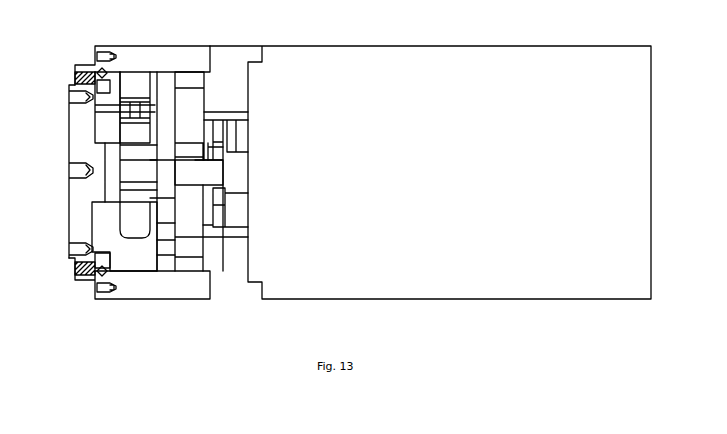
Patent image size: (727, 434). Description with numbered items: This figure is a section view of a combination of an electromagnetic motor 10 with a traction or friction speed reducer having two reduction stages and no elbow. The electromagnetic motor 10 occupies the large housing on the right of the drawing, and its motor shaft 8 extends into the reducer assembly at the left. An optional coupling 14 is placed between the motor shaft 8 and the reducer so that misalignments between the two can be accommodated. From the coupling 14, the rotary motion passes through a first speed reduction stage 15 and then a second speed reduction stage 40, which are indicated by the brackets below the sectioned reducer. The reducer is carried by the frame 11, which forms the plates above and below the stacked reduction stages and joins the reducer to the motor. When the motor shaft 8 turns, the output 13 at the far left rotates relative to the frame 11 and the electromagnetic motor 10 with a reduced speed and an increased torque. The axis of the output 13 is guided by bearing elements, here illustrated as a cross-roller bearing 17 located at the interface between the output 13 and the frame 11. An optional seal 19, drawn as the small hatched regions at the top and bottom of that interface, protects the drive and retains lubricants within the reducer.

The electromagnetic motor 10 is at (365, 50).
The frame 11 is at (180, 50).
The motor shaft 8 is at (237, 170).
The output 13 is at (78, 122).
The coupling 14 is at (219, 220).
The first speed reduction stage 15 is at (210, 310).
The cross-roller bearing 17 is at (94, 286).
The seal 19 is at (72, 277).
The second speed reduction stage 40 is at (163, 310).